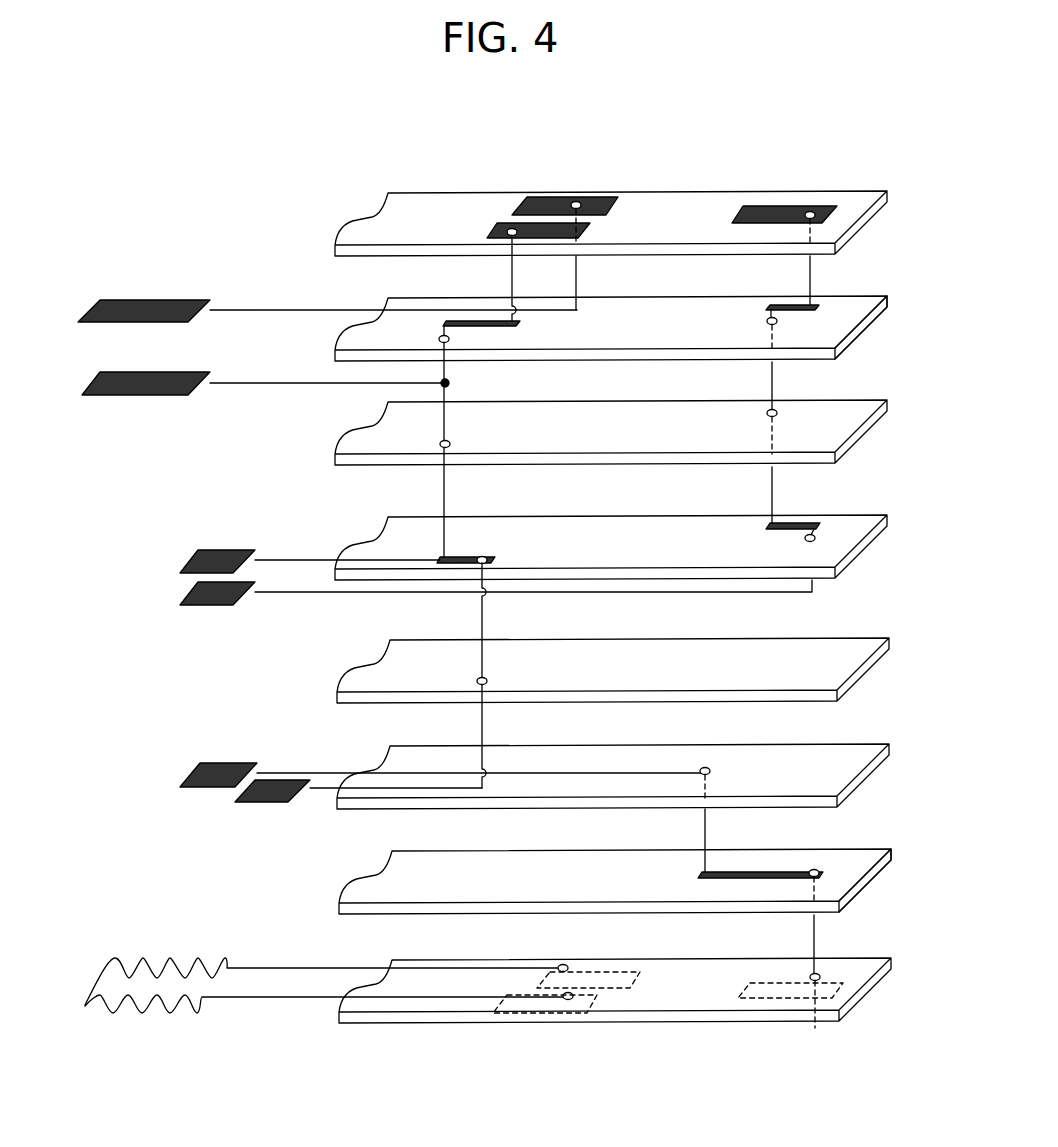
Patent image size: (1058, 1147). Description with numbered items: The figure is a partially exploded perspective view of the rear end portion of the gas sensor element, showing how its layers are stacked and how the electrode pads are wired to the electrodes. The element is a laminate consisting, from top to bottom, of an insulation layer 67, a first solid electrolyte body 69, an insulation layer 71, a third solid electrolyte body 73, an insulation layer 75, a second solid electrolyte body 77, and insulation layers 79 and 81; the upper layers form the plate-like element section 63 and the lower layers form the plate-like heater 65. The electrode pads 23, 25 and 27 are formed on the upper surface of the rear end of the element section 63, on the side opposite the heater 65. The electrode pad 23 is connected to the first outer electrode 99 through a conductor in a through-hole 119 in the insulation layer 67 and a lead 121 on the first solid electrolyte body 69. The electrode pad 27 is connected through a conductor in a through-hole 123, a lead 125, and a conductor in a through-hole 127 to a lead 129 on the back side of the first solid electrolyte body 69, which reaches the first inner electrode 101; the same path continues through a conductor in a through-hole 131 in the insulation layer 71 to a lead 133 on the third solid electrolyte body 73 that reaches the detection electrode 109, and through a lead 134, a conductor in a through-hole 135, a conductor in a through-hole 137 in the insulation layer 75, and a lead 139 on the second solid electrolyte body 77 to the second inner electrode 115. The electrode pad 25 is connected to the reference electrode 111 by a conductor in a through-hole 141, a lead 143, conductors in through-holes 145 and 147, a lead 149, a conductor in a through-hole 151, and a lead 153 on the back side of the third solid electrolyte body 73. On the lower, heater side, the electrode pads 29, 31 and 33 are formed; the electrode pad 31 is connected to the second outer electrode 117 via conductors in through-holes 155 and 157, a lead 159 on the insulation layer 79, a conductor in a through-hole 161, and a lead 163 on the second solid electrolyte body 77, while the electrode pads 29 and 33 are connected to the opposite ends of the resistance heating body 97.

The electrode pad 23 is at (586, 203).
The electrode pad 25 is at (795, 210).
The electrode pad 27 is at (505, 228).
The electrode pad 29 is at (635, 990).
The electrode pad 31 is at (862, 1000).
The electrode pad 33 is at (532, 1014).
The element section 63 is at (872, 349).
The heater 65 is at (880, 890).
The insulation layer 67 is at (690, 200).
The first solid electrolyte body 69 is at (640, 302).
The insulation layer 71 is at (622, 412).
The third solid electrolyte body 73 is at (615, 522).
The insulation layer 75 is at (660, 648).
The second solid electrolyte body 77 is at (835, 755).
The insulation layer 79 is at (805, 862).
The insulation layer 81 is at (703, 1013).
The resistance heating body 97 is at (128, 960).
The first outer electrode 99 is at (142, 302).
The first inner electrode 101 is at (145, 376).
The detection electrode 109 is at (200, 556).
The reference electrode 111 is at (185, 592).
The second inner electrode 115 is at (253, 803).
The second outer electrode 117 is at (200, 772).
The through-hole 119 is at (575, 201).
The lead 121 is at (300, 310).
The through-hole 123 is at (512, 228).
The lead 125 is at (512, 329).
The through-hole 127 is at (450, 342).
The lead 129 is at (300, 383).
The through-hole 131 is at (441, 447).
The lead 133 is at (300, 560).
The lead 134 is at (455, 556).
The through-hole 135 is at (487, 556).
The through-hole 137 is at (488, 678).
The lead 139 is at (320, 791).
The through-hole 141 is at (812, 212).
The lead 143 is at (805, 311).
The through-hole 145 is at (778, 325).
The through-hole 147 is at (766, 412).
The lead 149 is at (790, 523).
The through-hole 151 is at (817, 537).
The lead 153 is at (300, 596).
The through-hole 155 is at (820, 975).
The through-hole 157 is at (822, 870).
The lead 159 is at (730, 872).
The through-hole 161 is at (710, 767).
The lead 163 is at (330, 772).